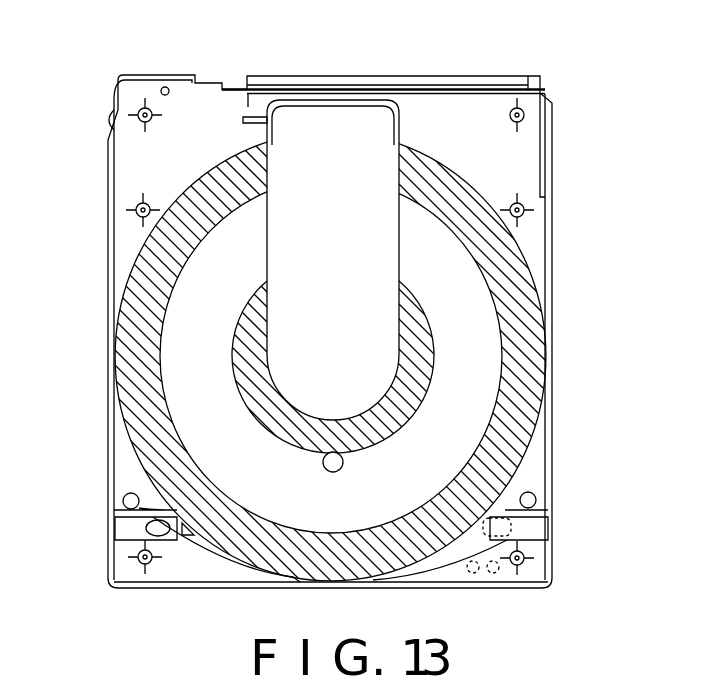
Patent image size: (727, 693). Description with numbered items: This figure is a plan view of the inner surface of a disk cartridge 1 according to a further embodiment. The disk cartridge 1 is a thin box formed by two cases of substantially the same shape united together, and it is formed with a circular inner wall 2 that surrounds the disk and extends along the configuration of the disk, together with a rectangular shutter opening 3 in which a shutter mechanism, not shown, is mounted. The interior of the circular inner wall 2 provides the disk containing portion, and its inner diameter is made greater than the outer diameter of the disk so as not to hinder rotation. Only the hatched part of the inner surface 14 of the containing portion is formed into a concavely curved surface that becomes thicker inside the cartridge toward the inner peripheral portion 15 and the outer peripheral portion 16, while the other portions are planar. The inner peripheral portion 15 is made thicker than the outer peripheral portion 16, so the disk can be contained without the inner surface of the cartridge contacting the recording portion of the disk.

The disk cartridge 1 is at (458, 123).
The circular inner wall 2 is at (480, 187).
The shutter opening 3 is at (343, 130).
The inner surface of the containing portion 14 is at (200, 303).
The inner peripheral portion 15 is at (270, 385).
The outer peripheral portion 16 is at (507, 277).